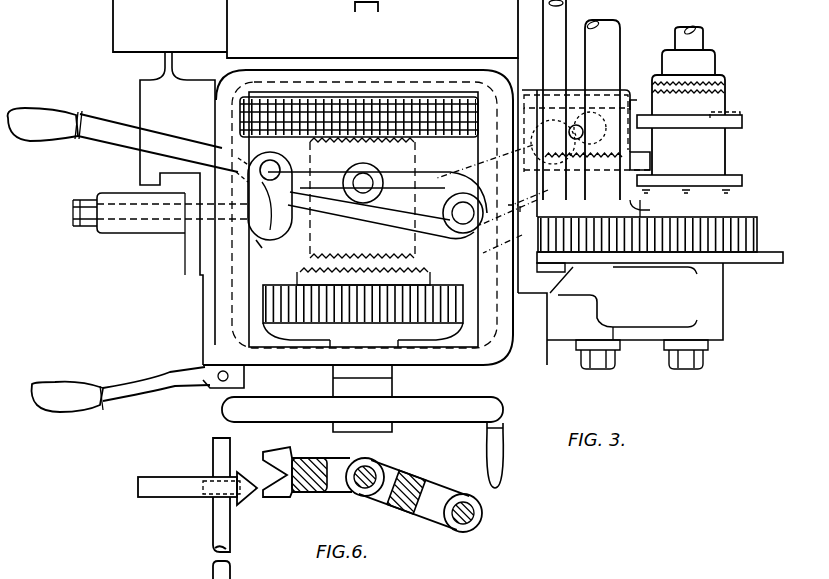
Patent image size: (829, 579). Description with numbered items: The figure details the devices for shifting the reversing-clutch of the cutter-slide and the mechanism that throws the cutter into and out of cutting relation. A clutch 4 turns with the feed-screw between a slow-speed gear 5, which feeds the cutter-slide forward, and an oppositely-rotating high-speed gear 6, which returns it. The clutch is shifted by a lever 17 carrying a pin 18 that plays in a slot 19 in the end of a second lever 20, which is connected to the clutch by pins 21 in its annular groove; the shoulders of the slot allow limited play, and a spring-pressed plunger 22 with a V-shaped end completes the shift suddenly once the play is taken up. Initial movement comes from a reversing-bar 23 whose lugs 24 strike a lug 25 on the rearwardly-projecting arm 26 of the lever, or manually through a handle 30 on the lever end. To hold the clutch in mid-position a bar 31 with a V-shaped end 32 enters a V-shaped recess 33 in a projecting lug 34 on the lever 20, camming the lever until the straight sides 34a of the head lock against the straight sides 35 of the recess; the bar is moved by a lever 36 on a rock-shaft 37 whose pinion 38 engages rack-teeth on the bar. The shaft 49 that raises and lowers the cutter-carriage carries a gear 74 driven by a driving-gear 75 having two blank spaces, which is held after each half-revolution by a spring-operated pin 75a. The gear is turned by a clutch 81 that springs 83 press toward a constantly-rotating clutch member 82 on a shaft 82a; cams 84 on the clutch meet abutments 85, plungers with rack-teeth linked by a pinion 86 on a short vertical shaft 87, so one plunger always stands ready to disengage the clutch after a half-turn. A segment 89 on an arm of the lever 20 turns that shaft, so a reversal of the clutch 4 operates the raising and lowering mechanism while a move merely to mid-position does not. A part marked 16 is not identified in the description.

In FIG. 3, the clutch 4 is at (362, 198).
In FIG. 3, the gear 5 is at (330, 115).
In FIG. 3, the gear 6 is at (430, 318).
In FIG. 3, the pivot pin end 16 is at (256, 166).
In FIG. 3, the lever 17 is at (381, 215).
In FIG. 3, the pin 18 is at (278, 170).
In FIG. 3, the slot 19 is at (268, 218).
In FIG. 3, the second lever 20 is at (428, 183).
In FIG. 6, the second lever 20 is at (430, 512).
In FIG. 3, the pins 21 is at (366, 180).
In FIG. 6, the pins 21 is at (372, 471).
In FIG. 3, the spring-pressed plunger 22 is at (258, 242).
In FIG. 3, the reversing-bar 23 is at (563, 22).
In FIG. 3, the lugs 24 is at (487, 199).
In FIG. 3, the lug 25 is at (535, 202).
In FIG. 3, the rearwardly-projecting arm 26 is at (488, 245).
In FIG. 3, the handle 30 is at (32, 114).
In FIG. 6, the bar 31 is at (165, 487).
In FIG. 6, the V-shaped end 32 is at (247, 497).
In FIG. 6, the V-shaped recess 33 is at (280, 457).
In FIG. 6, the projecting lug 34 is at (288, 497).
In FIG. 6, the straight sides 34a is at (265, 456).
In FIG. 6, the straight sides 35 is at (272, 490).
In FIG. 3, the lever 36 is at (62, 393).
In FIG. 3, the rock-shaft 37 is at (218, 390).
In FIG. 6, the rock-shaft 37 is at (214, 540).
In FIG. 6, the pinion 38 is at (208, 497).
In FIG. 3, the shaft 49 is at (610, 38).
In FIG. 3, the gear 74 is at (605, 268).
In FIG. 3, the driving-gear 75 is at (660, 240).
In FIG. 3, the spring-operated pin 75a is at (645, 205).
In FIG. 3, the clutch 81 is at (713, 147).
In FIG. 3, the clutch member 82 is at (708, 67).
In FIG. 3, the shaft 82a is at (708, 37).
In FIG. 3, the springs 83 is at (738, 189).
In FIG. 3, the cams 84 is at (728, 114).
In FIG. 3, the abutments 85 is at (630, 100).
In FIG. 3, the pinion 86 is at (573, 138).
In FIG. 3, the short vertical shaft 87 is at (576, 125).
In FIG. 3, the segment 89 is at (582, 186).